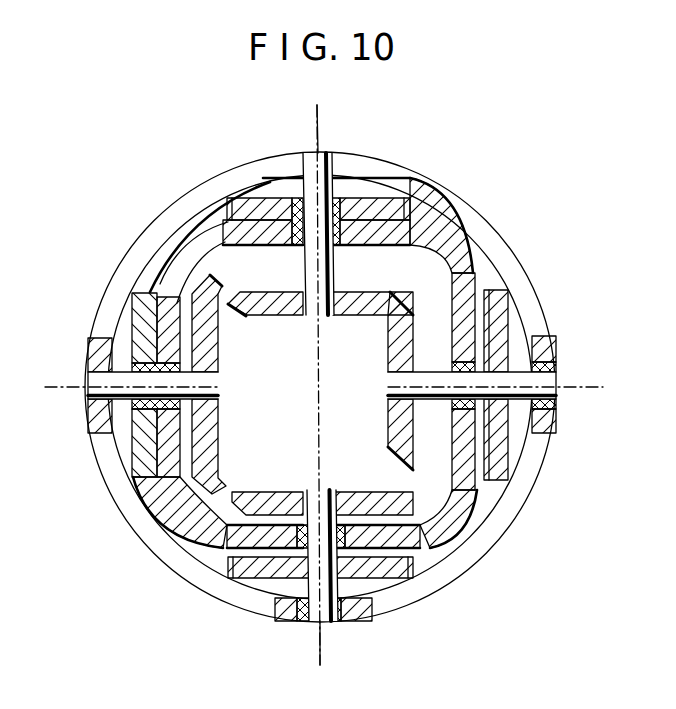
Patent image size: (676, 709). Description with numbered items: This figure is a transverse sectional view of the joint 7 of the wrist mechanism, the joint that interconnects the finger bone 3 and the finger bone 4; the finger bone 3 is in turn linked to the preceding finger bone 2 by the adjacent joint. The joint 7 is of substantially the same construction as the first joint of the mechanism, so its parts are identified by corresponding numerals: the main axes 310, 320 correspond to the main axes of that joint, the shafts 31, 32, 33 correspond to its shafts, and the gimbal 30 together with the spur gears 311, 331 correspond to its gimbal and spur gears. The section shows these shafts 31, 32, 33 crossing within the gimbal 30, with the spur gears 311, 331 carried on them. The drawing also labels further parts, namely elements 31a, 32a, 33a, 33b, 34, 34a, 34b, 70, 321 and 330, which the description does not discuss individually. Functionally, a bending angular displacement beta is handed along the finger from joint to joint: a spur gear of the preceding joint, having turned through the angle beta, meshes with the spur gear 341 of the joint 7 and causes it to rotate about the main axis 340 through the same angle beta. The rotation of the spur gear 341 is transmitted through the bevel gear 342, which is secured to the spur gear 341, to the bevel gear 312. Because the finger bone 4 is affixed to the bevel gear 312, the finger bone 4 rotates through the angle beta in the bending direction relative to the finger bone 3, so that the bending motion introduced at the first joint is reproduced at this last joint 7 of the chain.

The finger bone 2 is at (555, 418).
The finger bone 3 is at (353, 156).
The finger bone 4 is at (97, 420).
The joint 7 is at (470, 249).
The gimbal 30 is at (177, 263).
The shaft 31 is at (135, 408).
The left pole piece 31a is at (143, 343).
The shaft 32 is at (333, 189).
The top pole piece 32a is at (360, 252).
The shaft 33 is at (517, 378).
The right bearing 33a is at (557, 368).
The right upper coil 33b is at (507, 312).
The bottom yoke 34 is at (372, 600).
The bottom bearing 34a is at (300, 622).
The bottom pole piece 34b is at (348, 520).
The rotor chamber 70 is at (314, 389).
The main axis 310 is at (63, 387).
The spur gear 311 is at (148, 453).
The bevel gear 312 is at (212, 433).
The main axis 320 is at (322, 124).
The top coil 321 is at (410, 208).
The right shaft end 330 is at (566, 388).
The spur gear 331 is at (503, 457).
The main axis 340 is at (322, 632).
The spur gear 341 is at (243, 572).
The bevel gear 342 is at (266, 497).